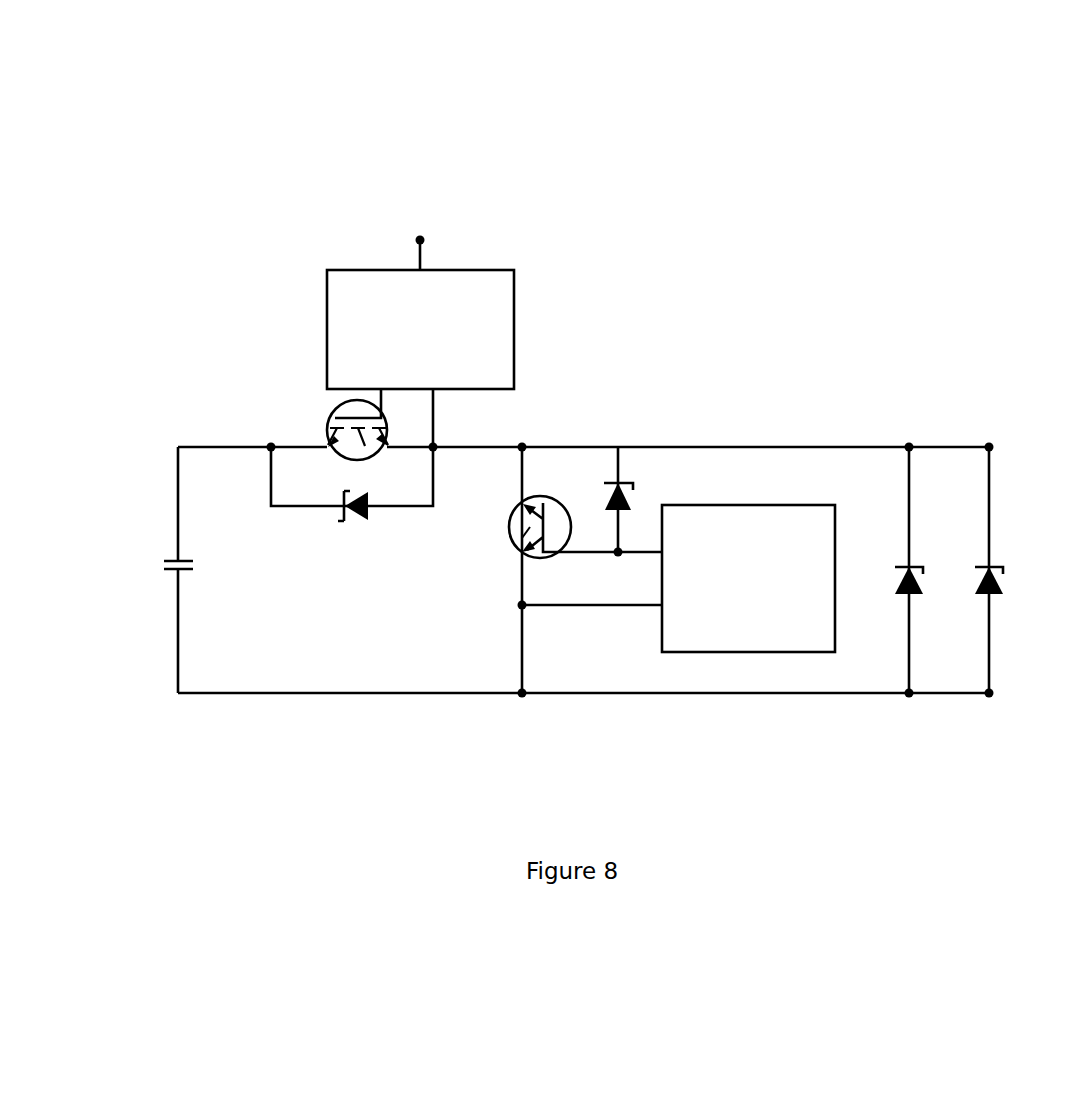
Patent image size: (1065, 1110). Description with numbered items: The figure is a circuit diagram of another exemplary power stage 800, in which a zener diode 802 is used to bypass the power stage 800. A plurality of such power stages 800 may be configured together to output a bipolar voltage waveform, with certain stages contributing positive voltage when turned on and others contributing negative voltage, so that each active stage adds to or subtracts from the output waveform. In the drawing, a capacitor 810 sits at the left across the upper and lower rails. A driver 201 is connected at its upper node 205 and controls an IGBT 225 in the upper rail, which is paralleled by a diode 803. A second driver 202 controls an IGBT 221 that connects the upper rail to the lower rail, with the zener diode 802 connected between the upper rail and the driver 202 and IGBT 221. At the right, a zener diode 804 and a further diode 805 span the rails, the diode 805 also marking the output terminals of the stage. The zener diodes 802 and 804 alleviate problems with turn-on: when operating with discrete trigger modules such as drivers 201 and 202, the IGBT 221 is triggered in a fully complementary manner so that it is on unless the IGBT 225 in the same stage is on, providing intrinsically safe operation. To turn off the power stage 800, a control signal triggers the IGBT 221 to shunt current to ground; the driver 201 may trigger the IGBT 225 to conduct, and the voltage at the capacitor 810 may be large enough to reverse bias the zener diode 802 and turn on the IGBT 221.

The power stage 800 is at (868, 208).
The driver 201 is at (420, 329).
The driver 202 is at (678, 578).
The input terminal 205 is at (412, 236).
The IGBT 221 is at (570, 499).
The IGBT 225 is at (324, 418).
The zener diode 802 is at (641, 482).
The diode 803 is at (357, 524).
The zener diode 804 is at (884, 563).
The diode / output terminal 805 is at (1001, 440).
The capacitor 810 is at (157, 557).